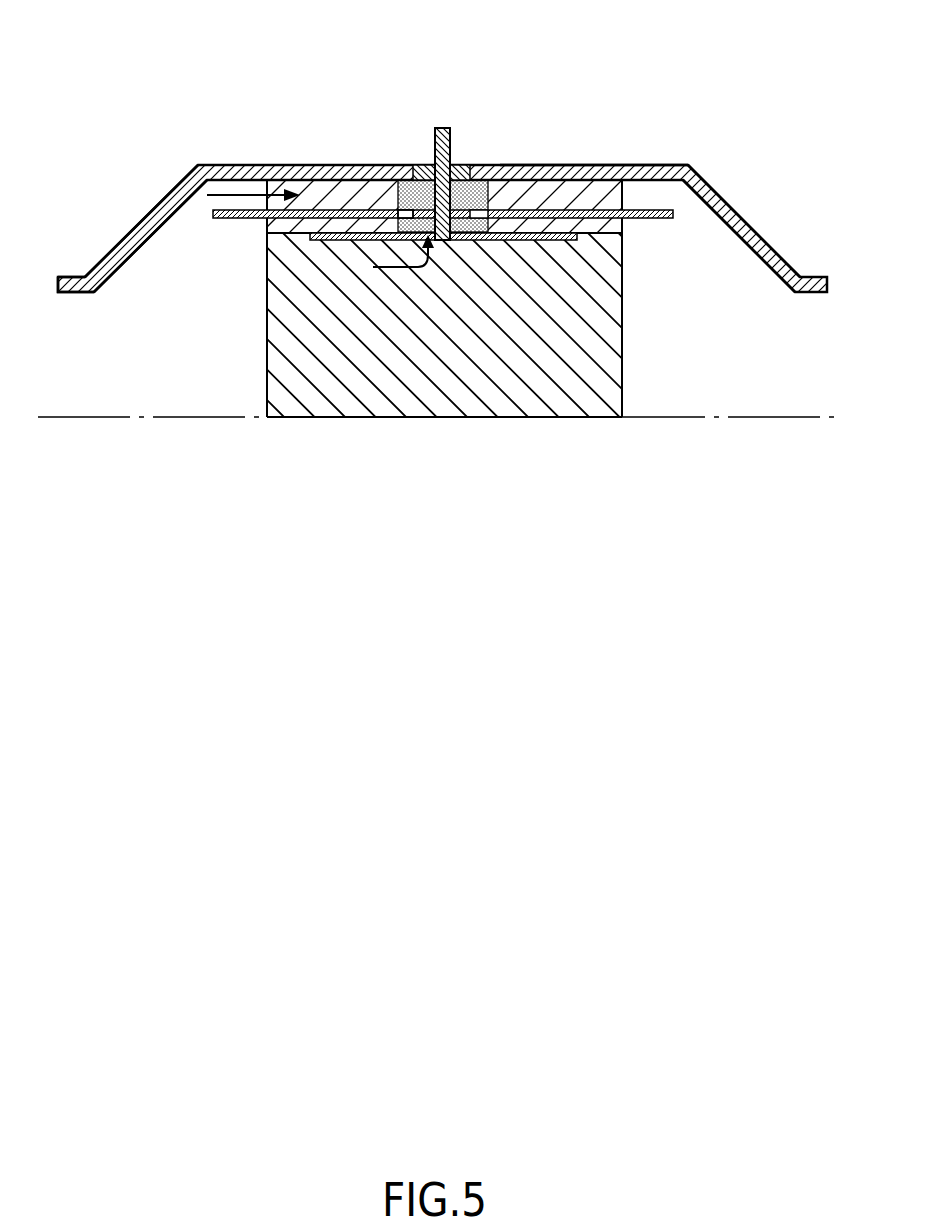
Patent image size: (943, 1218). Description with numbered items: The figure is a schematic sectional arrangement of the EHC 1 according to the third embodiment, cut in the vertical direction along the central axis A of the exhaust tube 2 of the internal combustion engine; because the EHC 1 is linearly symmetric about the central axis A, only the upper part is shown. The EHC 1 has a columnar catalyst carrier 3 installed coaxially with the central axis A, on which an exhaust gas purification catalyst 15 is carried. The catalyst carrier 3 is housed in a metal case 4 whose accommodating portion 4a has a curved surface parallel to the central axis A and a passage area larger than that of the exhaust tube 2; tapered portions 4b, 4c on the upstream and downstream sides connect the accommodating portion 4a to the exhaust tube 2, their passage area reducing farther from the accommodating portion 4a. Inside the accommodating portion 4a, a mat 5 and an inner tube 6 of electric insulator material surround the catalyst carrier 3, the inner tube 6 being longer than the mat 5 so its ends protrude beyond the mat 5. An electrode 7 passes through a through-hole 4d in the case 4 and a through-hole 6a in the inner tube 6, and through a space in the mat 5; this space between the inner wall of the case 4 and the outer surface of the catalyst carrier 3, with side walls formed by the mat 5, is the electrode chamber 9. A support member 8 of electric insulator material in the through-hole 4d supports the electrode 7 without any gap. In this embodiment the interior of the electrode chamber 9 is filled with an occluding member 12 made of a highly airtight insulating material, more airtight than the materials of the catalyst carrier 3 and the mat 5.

The EHC 1 is at (730, 52).
The exhaust tube 2 is at (64, 277).
The catalyst carrier 3 is at (265, 343).
The case 4 is at (295, 165).
The accommodating portion 4a is at (605, 165).
The tapered portion 4b is at (143, 215).
The tapered portion 4c is at (748, 212).
The through-hole 4d is at (427, 175).
The mat 5 is at (597, 227).
The inner tube 6 is at (262, 227).
The through-hole 6a is at (465, 208).
The electrode 7 is at (441, 128).
The support member 8 is at (458, 172).
The electrode chamber 9 is at (413, 198).
The occluding member 12 is at (392, 200).
The exhaust gas purification catalyst 15 is at (603, 347).
The central axis A is at (748, 417).